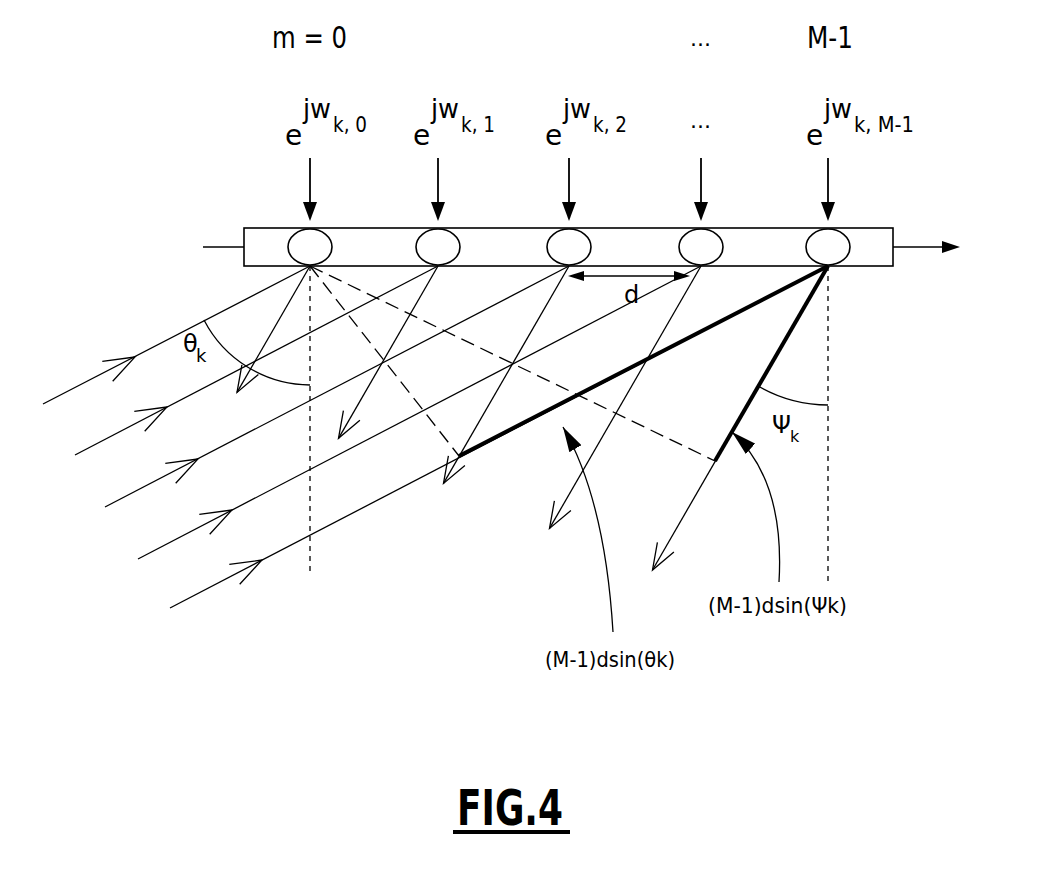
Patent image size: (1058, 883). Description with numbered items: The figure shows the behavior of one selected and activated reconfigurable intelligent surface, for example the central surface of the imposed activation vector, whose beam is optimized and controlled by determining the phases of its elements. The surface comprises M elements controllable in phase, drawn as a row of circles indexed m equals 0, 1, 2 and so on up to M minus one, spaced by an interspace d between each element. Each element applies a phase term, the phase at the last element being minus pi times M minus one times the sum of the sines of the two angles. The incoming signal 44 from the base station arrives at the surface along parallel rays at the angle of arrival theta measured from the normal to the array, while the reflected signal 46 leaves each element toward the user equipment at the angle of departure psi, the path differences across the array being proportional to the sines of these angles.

The incoming signal 44 is at (63, 395).
The reflected signal 46 is at (277, 327).
The array element m = 0 is at (319, 142).
The array element m = 1 is at (438, 142).
The array element m = 2 is at (569, 142).